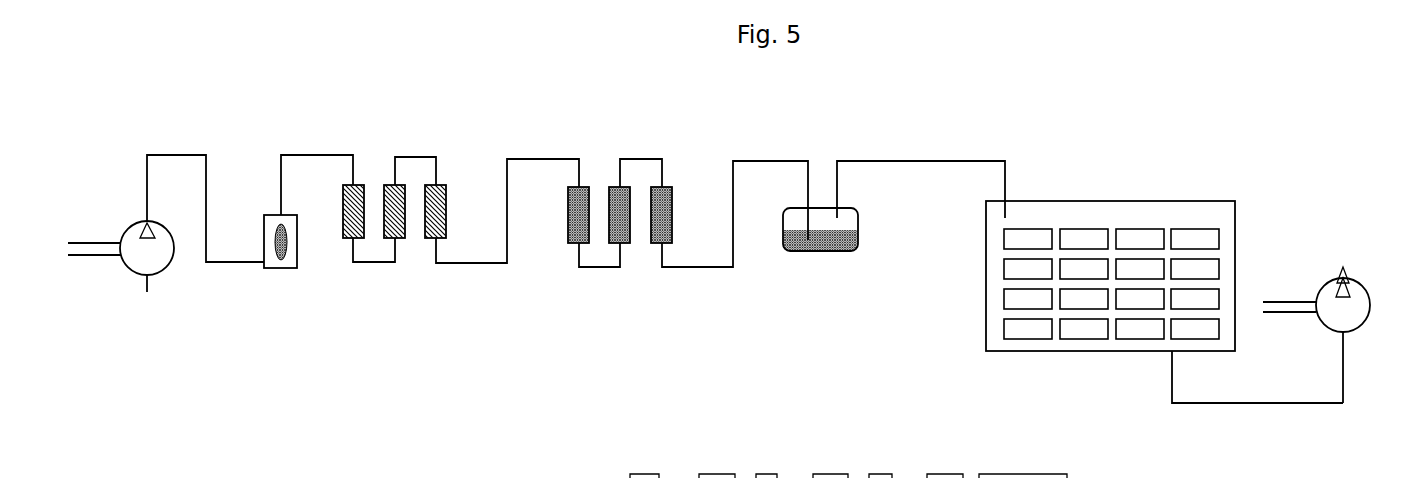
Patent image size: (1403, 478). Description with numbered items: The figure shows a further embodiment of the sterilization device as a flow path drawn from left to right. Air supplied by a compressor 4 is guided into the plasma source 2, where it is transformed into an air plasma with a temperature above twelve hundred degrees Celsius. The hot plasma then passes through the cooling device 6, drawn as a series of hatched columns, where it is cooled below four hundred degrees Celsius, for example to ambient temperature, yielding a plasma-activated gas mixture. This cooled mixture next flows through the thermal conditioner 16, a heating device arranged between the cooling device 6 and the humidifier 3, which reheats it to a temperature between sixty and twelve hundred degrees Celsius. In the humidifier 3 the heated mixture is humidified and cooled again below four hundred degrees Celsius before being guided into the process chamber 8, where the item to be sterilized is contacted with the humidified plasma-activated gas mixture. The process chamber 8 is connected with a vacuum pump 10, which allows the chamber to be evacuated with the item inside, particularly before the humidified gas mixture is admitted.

The plasma source 2 is at (308, 247).
The humidifier 3 is at (894, 250).
The compressor 4 is at (166, 247).
The cooling device 6 is at (461, 248).
The process chamber 8 is at (1164, 308).
The vacuum pump 10 is at (1316, 364).
The thermal conditioner 16 is at (688, 249).